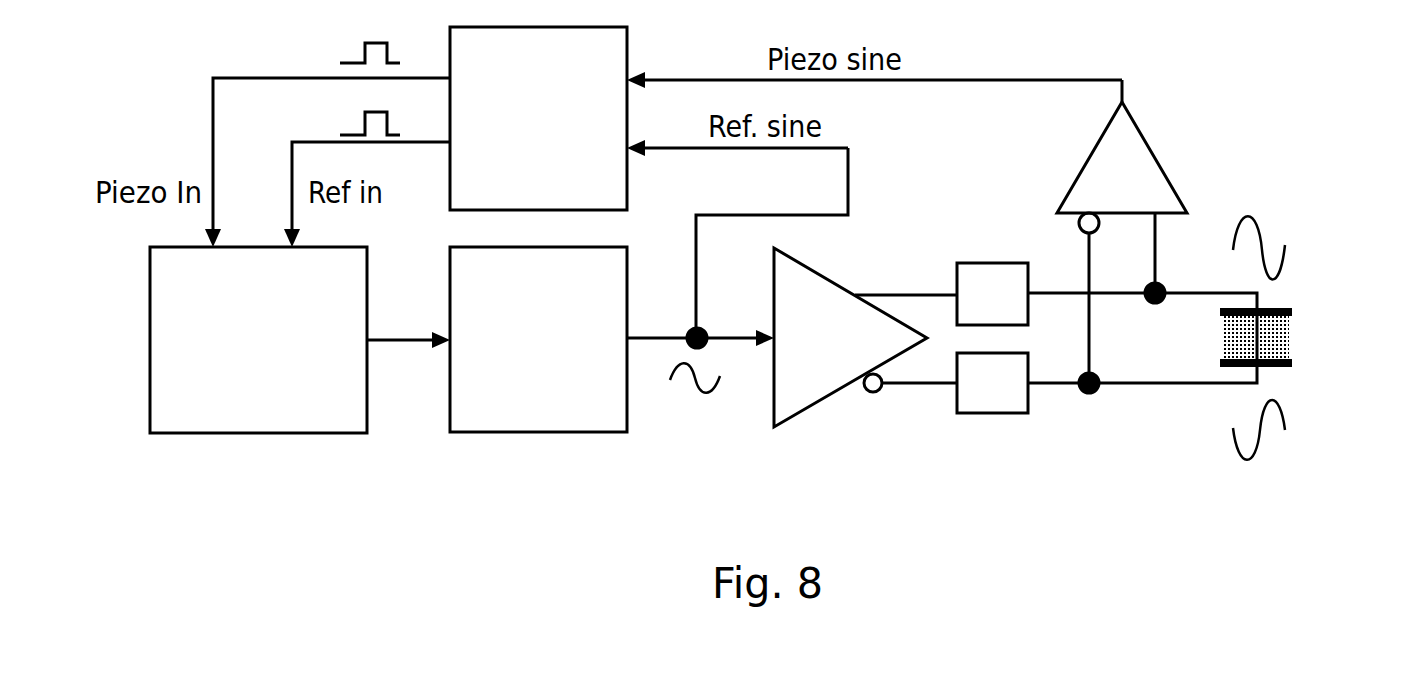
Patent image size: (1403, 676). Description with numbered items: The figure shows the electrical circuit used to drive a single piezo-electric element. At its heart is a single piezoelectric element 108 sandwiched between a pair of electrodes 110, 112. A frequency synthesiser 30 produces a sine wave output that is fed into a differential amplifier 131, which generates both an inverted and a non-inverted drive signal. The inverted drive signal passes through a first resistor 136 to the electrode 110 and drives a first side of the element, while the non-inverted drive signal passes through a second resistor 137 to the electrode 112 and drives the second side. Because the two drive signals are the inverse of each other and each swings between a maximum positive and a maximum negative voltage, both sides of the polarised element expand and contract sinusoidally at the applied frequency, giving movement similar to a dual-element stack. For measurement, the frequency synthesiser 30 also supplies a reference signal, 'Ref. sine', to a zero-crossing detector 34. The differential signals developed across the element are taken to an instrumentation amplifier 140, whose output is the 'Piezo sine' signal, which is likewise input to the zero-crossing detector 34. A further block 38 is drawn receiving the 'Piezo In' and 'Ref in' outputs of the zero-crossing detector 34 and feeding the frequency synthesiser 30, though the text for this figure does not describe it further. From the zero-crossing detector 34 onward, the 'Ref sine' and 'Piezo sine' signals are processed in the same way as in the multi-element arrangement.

The zero-crossing detector 34 is at (516, 135).
The lock-in detection unit 38 is at (236, 359).
The frequency synthesiser 30 is at (516, 358).
The differential amplifier 131 is at (795, 357).
The first resistor 136 is at (992, 262).
The second resistor 137 is at (993, 413).
The instrumentation amplifier 140 is at (1158, 157).
The electrode 110 is at (1292, 310).
The piezoelectric element 108 is at (1290, 337).
The electrode 112 is at (1292, 365).